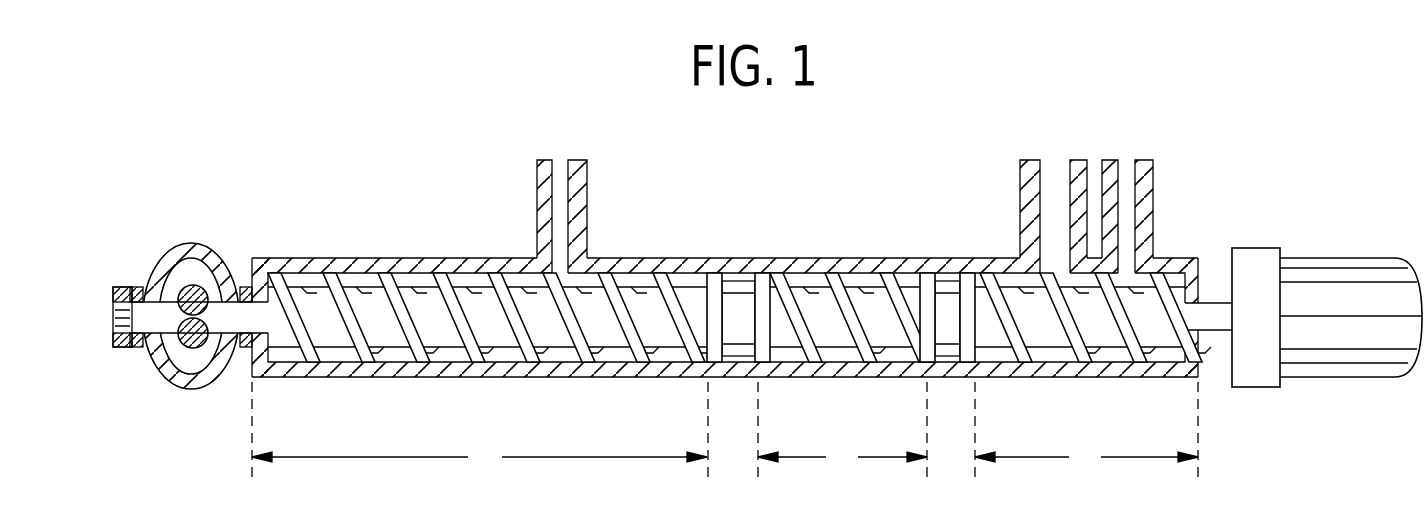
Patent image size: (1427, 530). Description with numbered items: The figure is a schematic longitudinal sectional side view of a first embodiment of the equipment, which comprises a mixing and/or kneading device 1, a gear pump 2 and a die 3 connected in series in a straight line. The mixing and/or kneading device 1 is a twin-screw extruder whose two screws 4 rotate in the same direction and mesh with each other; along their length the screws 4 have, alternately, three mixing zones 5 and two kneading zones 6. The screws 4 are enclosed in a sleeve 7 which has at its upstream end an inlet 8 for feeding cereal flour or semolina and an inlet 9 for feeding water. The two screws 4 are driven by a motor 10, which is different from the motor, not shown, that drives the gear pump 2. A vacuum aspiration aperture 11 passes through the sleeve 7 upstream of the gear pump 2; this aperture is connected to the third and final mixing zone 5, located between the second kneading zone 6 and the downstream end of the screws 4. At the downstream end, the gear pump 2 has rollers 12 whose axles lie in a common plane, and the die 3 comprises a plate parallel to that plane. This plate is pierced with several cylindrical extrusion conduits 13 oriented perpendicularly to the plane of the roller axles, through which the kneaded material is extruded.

The mixing and/or kneading device 1 is at (760, 203).
The gear pump 2 is at (223, 258).
The die 3 is at (121, 285).
The screws 4 is at (423, 308).
The mixing zones 5 is at (725, 431).
The kneading zones 6 is at (841, 375).
The sleeve 7 is at (840, 262).
The inlet 8 is at (1123, 160).
The inlet 9 is at (1053, 160).
The motor 10 is at (1360, 258).
The vacuum aspiration aperture 11 is at (556, 160).
The rollers 12 is at (203, 335).
The cylindrical extrusion conduits 13 is at (113, 322).